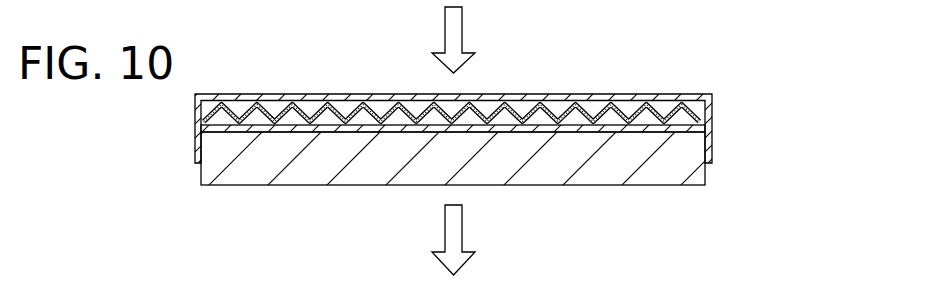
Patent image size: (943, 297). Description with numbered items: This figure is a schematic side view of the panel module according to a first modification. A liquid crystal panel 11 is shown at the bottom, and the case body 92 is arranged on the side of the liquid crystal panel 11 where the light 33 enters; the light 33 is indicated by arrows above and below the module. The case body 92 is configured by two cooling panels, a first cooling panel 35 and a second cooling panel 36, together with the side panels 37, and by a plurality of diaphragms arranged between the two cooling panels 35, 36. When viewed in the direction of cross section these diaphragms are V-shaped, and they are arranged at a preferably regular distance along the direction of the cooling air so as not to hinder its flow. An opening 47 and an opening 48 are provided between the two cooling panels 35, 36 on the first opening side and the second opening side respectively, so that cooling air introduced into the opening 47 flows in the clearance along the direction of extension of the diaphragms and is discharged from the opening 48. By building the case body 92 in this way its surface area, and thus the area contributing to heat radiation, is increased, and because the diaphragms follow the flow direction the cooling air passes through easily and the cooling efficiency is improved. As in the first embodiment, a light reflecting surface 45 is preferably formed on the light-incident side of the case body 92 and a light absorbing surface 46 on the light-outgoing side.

The liquid crystal panel 11 is at (705, 174).
The light 33 is at (462, 30).
The first cooling panel 35 is at (651, 132).
The second cooling panel 36 is at (667, 97).
The side panels 37 is at (195, 146).
The light reflecting surface 45 is at (276, 102).
The light absorbing surface 46 is at (345, 124).
The opening 47 is at (560, 105).
The opening 48 is at (582, 118).
The case body 92 is at (389, 84).